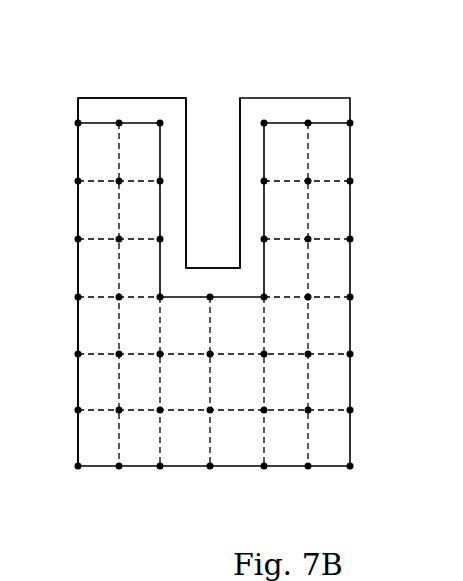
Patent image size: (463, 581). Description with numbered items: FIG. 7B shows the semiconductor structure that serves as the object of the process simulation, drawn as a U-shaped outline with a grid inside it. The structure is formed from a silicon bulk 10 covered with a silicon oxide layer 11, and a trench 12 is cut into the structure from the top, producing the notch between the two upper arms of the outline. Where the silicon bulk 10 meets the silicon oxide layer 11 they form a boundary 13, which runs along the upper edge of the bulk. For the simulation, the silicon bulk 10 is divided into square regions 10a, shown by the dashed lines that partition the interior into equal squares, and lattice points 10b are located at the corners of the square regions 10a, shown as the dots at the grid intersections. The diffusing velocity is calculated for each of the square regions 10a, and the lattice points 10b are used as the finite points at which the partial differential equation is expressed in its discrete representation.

The silicon bulk 10 is at (77, 327).
The square regions 10a is at (140, 152).
The lattice points 10b is at (143, 123).
The silicon oxide layer 11 is at (135, 108).
The trench 12 is at (207, 170).
The boundary 13 is at (143, 122).